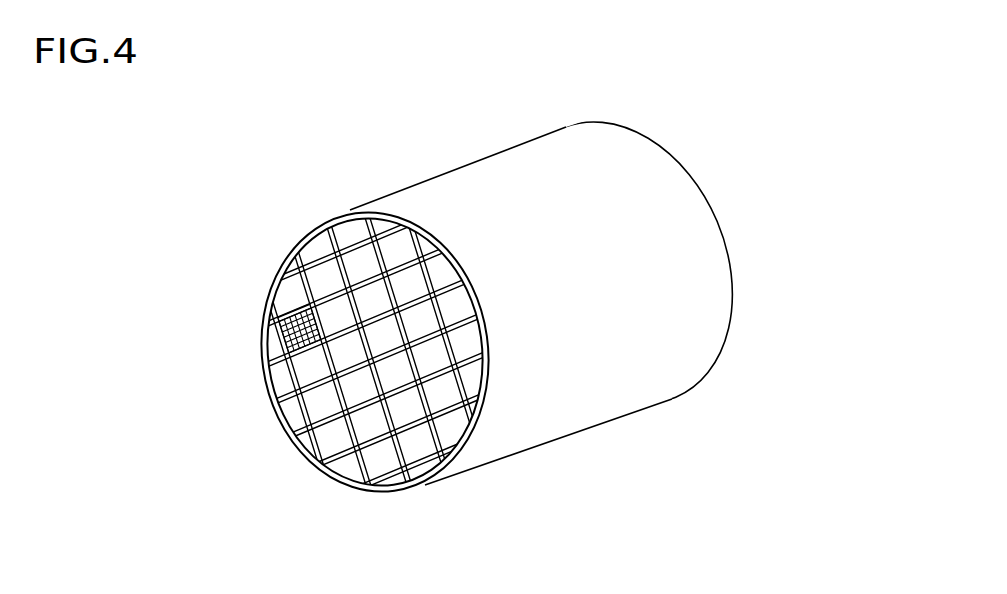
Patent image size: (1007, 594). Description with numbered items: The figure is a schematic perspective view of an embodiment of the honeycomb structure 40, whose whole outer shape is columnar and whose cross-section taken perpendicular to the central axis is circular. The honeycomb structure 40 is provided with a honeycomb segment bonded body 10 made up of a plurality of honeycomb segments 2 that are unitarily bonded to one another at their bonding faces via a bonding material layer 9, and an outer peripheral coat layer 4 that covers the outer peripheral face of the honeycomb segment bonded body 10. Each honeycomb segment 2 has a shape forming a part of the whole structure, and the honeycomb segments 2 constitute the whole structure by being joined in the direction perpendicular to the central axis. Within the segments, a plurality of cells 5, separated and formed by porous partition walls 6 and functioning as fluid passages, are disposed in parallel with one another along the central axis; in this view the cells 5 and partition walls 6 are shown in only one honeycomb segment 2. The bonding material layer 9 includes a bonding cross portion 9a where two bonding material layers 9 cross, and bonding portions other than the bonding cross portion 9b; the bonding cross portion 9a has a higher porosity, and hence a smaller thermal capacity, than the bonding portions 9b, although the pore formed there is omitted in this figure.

The honeycomb structure 40 is at (453, 156).
The honeycomb segment bonded body 10 is at (386, 215).
The outer peripheral coat layer 4 is at (260, 351).
The honeycomb segment 2 is at (317, 380).
The bonding material layer 9 is at (335, 297).
The bonding cross portion 9a is at (352, 287).
The bonding portion other than the bonding cross portion 9b is at (433, 383).
The cell 5 is at (280, 290).
The partition wall 6 is at (286, 318).